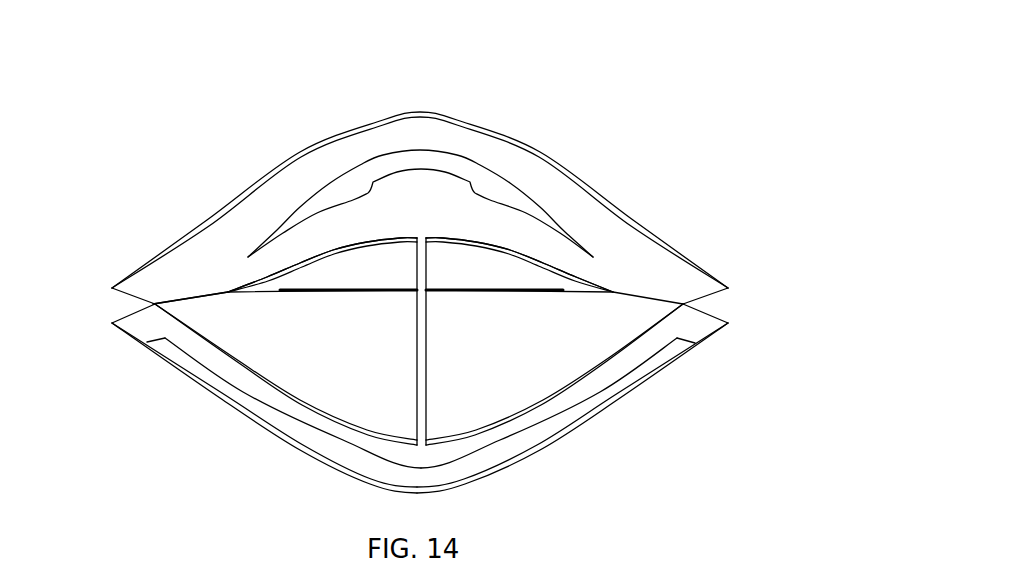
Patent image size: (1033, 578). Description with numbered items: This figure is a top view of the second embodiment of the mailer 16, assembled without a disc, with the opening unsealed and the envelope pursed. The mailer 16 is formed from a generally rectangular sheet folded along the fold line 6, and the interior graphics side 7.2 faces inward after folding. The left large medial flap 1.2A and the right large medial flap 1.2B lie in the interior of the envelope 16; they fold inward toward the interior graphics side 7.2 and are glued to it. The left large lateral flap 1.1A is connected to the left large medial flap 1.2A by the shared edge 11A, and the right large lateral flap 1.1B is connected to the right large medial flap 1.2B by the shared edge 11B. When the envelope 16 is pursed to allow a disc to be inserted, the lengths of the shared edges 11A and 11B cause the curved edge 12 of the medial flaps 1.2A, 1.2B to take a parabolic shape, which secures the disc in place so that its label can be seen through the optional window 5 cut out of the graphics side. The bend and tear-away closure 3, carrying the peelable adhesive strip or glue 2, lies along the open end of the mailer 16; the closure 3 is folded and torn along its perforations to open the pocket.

The mailer 16 is at (494, 88).
The window 5 is at (330, 188).
The fold line 6 is at (489, 287).
The right large medial flap 1.2B is at (370, 263).
The left large medial flap 1.2A is at (518, 272).
The curved edge 12 is at (321, 258).
The interior graphics side 7.2 is at (233, 278).
The shared edge 11B is at (178, 300).
The shared edge 11A is at (667, 305).
The right large lateral flap 1.1B is at (378, 363).
The left large lateral flap 1.1A is at (518, 365).
The bend and tear-away closure 3 is at (134, 328).
The adhesive strip or glue 2 is at (628, 383).